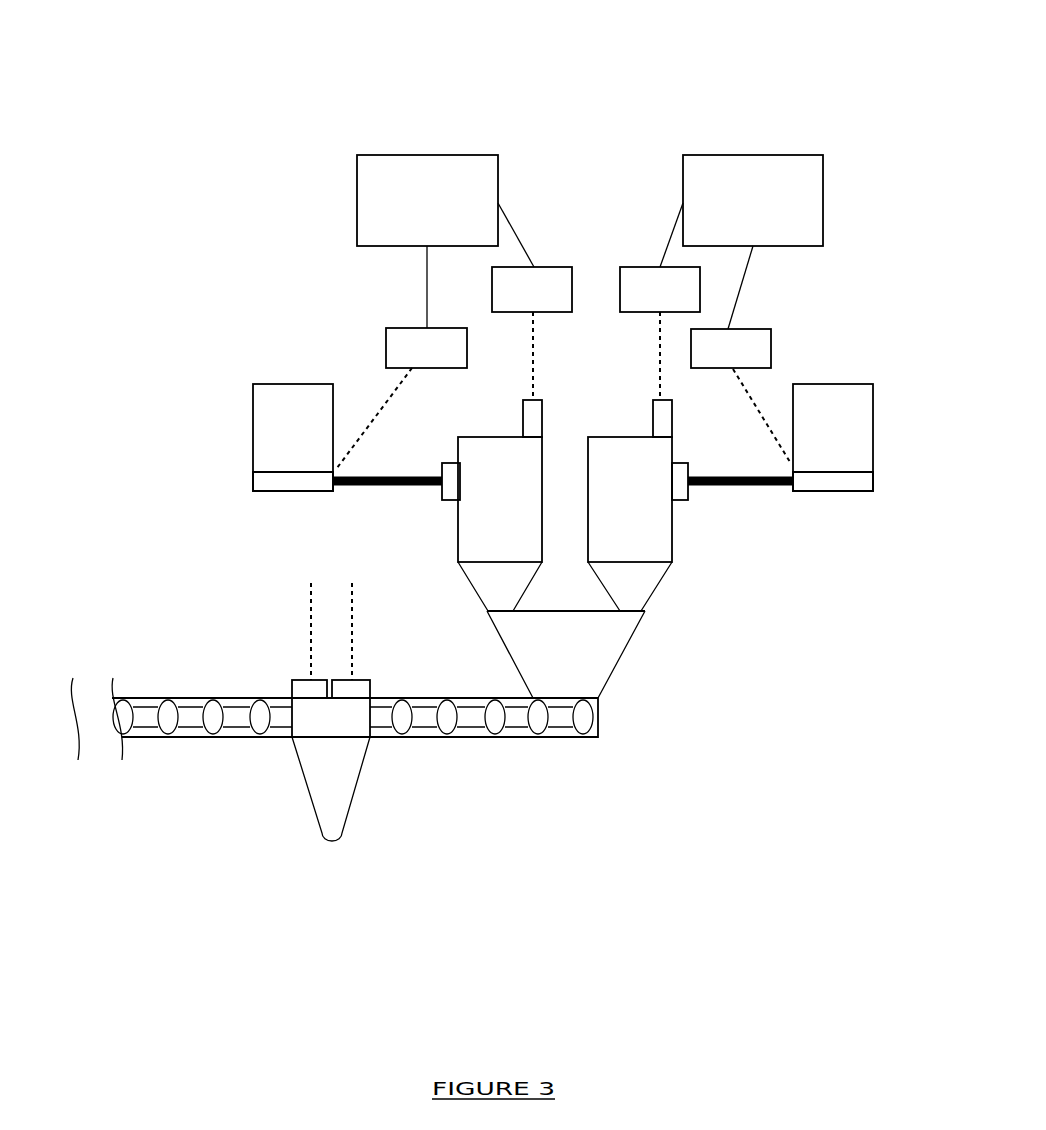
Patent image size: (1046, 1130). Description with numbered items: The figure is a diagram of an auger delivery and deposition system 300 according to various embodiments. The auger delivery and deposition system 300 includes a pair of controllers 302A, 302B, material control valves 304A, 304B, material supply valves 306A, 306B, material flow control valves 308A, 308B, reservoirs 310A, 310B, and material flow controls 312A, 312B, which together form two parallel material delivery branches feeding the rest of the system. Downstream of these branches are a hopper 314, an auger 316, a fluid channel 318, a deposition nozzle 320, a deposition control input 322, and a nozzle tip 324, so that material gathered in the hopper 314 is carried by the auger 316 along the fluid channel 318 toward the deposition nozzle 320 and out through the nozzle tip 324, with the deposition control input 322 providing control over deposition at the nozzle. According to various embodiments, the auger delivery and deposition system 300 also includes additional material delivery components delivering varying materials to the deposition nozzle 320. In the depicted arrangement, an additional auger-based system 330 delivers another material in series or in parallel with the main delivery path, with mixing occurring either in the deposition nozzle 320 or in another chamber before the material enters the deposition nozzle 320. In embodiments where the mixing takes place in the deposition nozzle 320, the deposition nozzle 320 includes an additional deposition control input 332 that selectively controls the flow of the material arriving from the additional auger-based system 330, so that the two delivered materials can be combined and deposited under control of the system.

The auger delivery and deposition system 300 is at (375, 55).
The controller 302A is at (427, 200).
The controller 302B is at (753, 200).
The material control valve 304A is at (532, 289).
The material control valve 304B is at (660, 289).
The material supply valve 306A is at (492, 505).
The material supply valve 306B is at (638, 505).
The material flow control valve 308A is at (426, 348).
The material flow control valve 308B is at (731, 348).
The reservoir 310A is at (268, 428).
The reservoir 310B is at (863, 442).
The material flow control 312A is at (290, 482).
The material flow control 312B is at (815, 483).
The hopper 314 is at (610, 643).
The auger 316 is at (563, 717).
The fluid channel 318 is at (384, 765).
The deposition nozzle 320 is at (318, 722).
The deposition control input 322 is at (360, 675).
The nozzle tip 324 is at (320, 780).
The additional auger-based system 330 is at (157, 737).
The additional deposition control input 332 is at (310, 677).